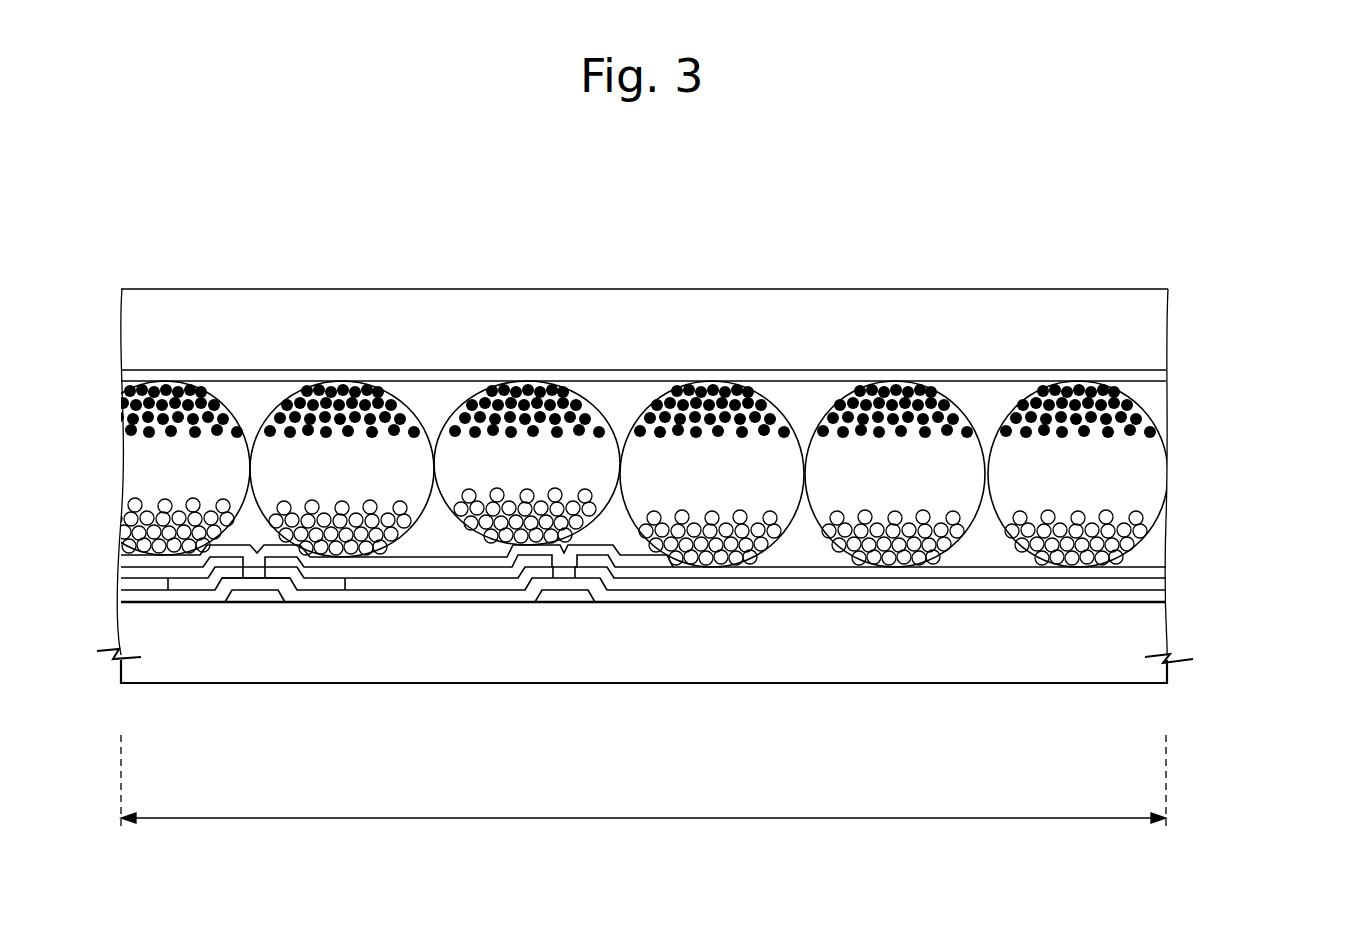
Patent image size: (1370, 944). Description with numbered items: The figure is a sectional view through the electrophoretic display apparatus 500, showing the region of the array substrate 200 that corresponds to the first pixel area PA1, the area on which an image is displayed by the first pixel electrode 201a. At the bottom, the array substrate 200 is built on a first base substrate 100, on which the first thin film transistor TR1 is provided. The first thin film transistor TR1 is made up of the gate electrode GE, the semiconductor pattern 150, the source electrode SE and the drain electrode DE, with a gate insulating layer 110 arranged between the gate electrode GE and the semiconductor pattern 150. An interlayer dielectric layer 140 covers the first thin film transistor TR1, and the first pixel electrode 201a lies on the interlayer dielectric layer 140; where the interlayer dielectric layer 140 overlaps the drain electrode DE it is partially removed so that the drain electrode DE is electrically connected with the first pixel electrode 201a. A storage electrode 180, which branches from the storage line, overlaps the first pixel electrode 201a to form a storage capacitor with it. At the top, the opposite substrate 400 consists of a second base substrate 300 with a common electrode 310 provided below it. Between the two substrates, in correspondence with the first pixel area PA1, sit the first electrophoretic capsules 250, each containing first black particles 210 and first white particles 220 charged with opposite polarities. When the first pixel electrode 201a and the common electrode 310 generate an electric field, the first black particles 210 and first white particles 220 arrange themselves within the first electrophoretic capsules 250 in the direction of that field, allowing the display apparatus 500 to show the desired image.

The electrophoretic display apparatus 500 is at (1263, 226).
The opposite substrate 400 is at (1263, 312).
The second base substrate 300 is at (1156, 329).
The common electrode 310 is at (1159, 375).
The first electrophoretic capsules 250 is at (1263, 412).
The first black particles 210 is at (1159, 425).
The first white particles 220 is at (1125, 520).
The array substrate 200 is at (1276, 518).
The first pixel electrode 201a is at (1165, 571).
The interlayer dielectric layer 140 is at (1165, 578).
The gate insulating layer 110 is at (1165, 590).
The first base substrate 100 is at (1158, 627).
The first thin film transistor TR1 is at (338, 738).
The gate electrode GE is at (258, 598).
The source electrode SE is at (183, 572).
The drain electrode DE is at (320, 572).
The semiconductor pattern 150 is at (205, 584).
The storage electrode 180 is at (565, 598).
The first pixel area PA1 is at (644, 773).